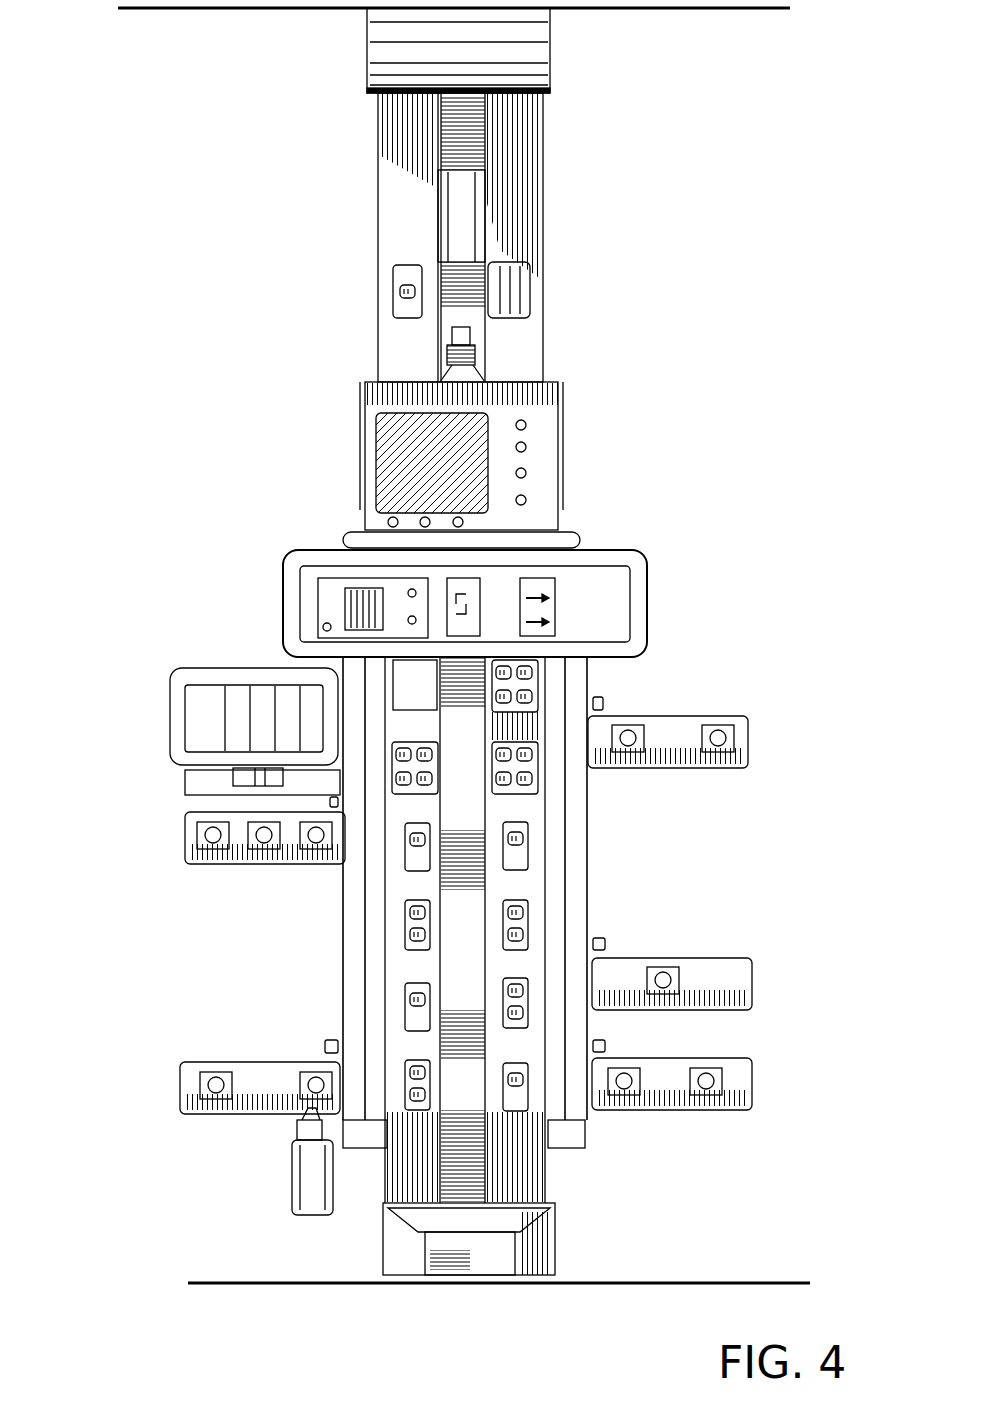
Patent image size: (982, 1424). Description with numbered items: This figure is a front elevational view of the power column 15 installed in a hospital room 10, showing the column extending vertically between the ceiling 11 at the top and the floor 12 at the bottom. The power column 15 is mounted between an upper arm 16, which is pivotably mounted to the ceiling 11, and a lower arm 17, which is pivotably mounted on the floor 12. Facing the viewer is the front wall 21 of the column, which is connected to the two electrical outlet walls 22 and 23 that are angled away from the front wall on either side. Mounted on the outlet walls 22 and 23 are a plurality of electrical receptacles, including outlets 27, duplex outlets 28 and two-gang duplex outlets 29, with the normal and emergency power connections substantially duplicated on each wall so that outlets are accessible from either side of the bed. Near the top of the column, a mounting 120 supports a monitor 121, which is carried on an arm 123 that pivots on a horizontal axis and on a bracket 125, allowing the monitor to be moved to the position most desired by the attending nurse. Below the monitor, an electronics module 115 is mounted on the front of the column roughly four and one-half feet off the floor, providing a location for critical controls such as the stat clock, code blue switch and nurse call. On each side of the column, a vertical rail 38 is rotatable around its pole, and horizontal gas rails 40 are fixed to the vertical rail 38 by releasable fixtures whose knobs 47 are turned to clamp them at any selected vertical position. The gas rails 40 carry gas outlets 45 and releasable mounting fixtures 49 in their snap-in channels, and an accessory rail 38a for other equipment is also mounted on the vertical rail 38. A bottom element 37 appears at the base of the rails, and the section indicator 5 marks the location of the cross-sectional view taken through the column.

The hospital room 10 is at (159, 352).
The ceiling 11 is at (148, 10).
The floor 12 is at (190, 1283).
The power column 15 is at (724, 276).
The upper arm 16 is at (552, 42).
The lower arm 17 is at (558, 1250).
The front wall 21 is at (470, 1135).
The electrical outlet wall 22 is at (395, 953).
The electrical outlet wall 23 is at (535, 1190).
The electrical receptacles 27 is at (407, 993).
The duplex outlets 28 is at (530, 838).
The two-gang duplex outlets 29 is at (546, 683).
The bottom bracket 37 is at (360, 1148).
The vertical rail 38 is at (583, 866).
The accessory rail 38a is at (185, 780).
The horizontal gas rail 40 is at (190, 838).
The gas outlets 45 is at (222, 862).
The knob 47 is at (604, 705).
The releasable mounting fixture 49 is at (670, 968).
The electronics module 115 is at (620, 625).
The mounting 120 is at (520, 352).
The monitor 121 is at (550, 452).
The arm 123 is at (482, 288).
The bracket 125 is at (452, 372).
The section line 5- 5 is at (130, 883).